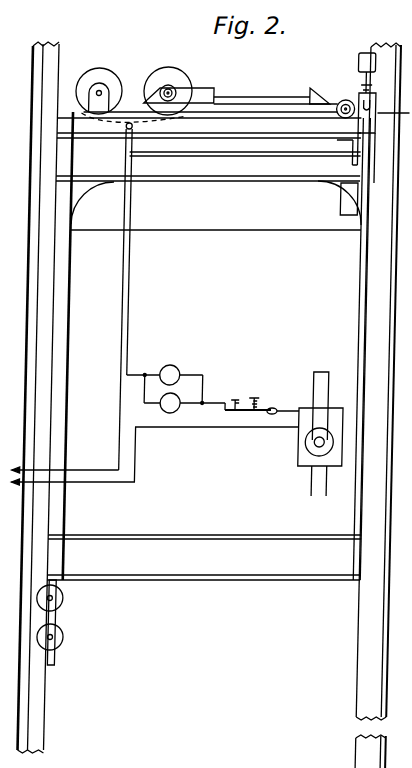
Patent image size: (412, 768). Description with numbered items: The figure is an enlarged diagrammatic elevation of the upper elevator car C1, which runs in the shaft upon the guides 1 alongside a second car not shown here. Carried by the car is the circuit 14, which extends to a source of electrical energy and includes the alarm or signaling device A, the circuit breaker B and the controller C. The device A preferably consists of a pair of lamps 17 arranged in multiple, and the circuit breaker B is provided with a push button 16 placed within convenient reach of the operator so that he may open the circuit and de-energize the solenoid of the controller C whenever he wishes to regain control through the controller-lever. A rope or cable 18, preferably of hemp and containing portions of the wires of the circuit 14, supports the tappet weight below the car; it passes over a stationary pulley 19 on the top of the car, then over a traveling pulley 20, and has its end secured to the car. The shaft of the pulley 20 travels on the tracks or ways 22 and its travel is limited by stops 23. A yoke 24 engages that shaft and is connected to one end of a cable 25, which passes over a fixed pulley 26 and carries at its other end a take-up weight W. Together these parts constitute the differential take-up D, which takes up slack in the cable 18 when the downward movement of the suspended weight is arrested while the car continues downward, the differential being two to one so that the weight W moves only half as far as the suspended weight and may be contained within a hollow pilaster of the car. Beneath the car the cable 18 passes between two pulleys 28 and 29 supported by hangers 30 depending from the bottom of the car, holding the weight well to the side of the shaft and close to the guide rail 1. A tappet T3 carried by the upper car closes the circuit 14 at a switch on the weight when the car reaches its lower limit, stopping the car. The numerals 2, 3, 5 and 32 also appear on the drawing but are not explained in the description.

The guides 1 is at (392, 297).
The rod 2 is at (317, 496).
The bolt 3 is at (376, 90).
The block 5 is at (379, 62).
The circuit 14 is at (281, 156).
The push button 16 is at (237, 396).
The lamps 17 is at (186, 373).
The rope or cable 18 is at (83, 288).
The stationary pulley 19 is at (95, 72).
The traveling pulley 20 is at (182, 80).
The tracks or ways 22 is at (269, 112).
The stops 23 is at (149, 86).
The yoke 24 is at (220, 100).
The cable 25 is at (243, 116).
The fixed pulley 26 is at (348, 100).
The pulley 28 is at (70, 598).
The pulley 29 is at (73, 636).
The hangers 30 is at (69, 650).
The rail 32 is at (214, 405).
The alarm or signaling device A is at (168, 364).
The circuit breaker B is at (274, 398).
The controller C is at (308, 448).
The elevator car C1 is at (256, 322).
The differential take-up D is at (235, 117).
The tappet T3 is at (67, 668).
The take-up weight W is at (345, 198).